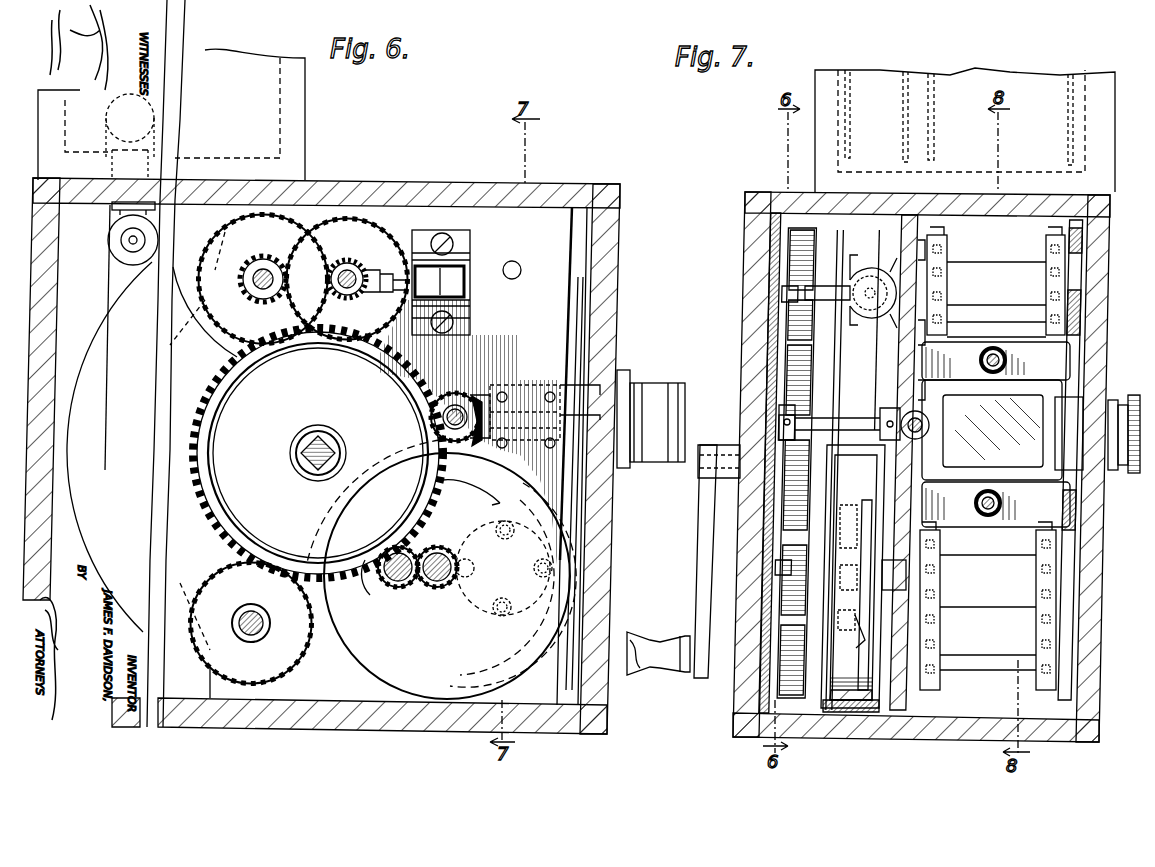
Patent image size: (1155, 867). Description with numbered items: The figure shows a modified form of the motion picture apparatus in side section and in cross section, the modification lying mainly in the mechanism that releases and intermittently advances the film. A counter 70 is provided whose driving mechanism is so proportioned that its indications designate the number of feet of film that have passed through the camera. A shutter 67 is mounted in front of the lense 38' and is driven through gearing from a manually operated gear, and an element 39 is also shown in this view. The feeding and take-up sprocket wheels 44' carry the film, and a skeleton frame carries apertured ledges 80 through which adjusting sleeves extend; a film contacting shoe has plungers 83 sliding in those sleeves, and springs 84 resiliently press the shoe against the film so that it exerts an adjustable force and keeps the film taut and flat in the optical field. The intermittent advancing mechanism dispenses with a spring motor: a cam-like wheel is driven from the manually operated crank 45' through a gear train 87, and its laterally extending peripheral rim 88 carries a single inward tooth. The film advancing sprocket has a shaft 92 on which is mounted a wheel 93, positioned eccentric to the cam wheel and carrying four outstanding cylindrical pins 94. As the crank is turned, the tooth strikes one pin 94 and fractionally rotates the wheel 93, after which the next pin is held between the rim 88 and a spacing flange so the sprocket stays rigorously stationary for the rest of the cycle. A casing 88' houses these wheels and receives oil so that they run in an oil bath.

In FIG. 6, the lense 38' is at (651, 403).
In FIG. 7, the exposure aperture plate 39 is at (996, 434).
In FIG. 7, the feeding and take-up sprocket wheels 44' is at (988, 680).
In FIG. 6, the manually operated crank 45' is at (683, 561).
In FIG. 6, the shutter 67 is at (577, 343).
In FIG. 6, the counter 70 is at (470, 292).
In FIG. 7, the counter 70 is at (868, 318).
In FIG. 7, the apertured ledges 80 is at (968, 372).
In FIG. 7, the plungers 83 is at (1005, 360).
In FIG. 7, the springs 84 is at (990, 378).
In FIG. 6, the gear train 87 is at (392, 586).
In FIG. 7, the gear train 87 is at (790, 578).
In FIG. 6, the peripheral rim 88 is at (450, 576).
In FIG. 7, the peripheral rim 88 is at (853, 576).
In FIG. 7, the casing 88' is at (851, 737).
In FIG. 7, the shaft 92 is at (900, 577).
In FIG. 7, the wheel 93 is at (866, 640).
In FIG. 7, the cylindrical pins 94 is at (857, 530).